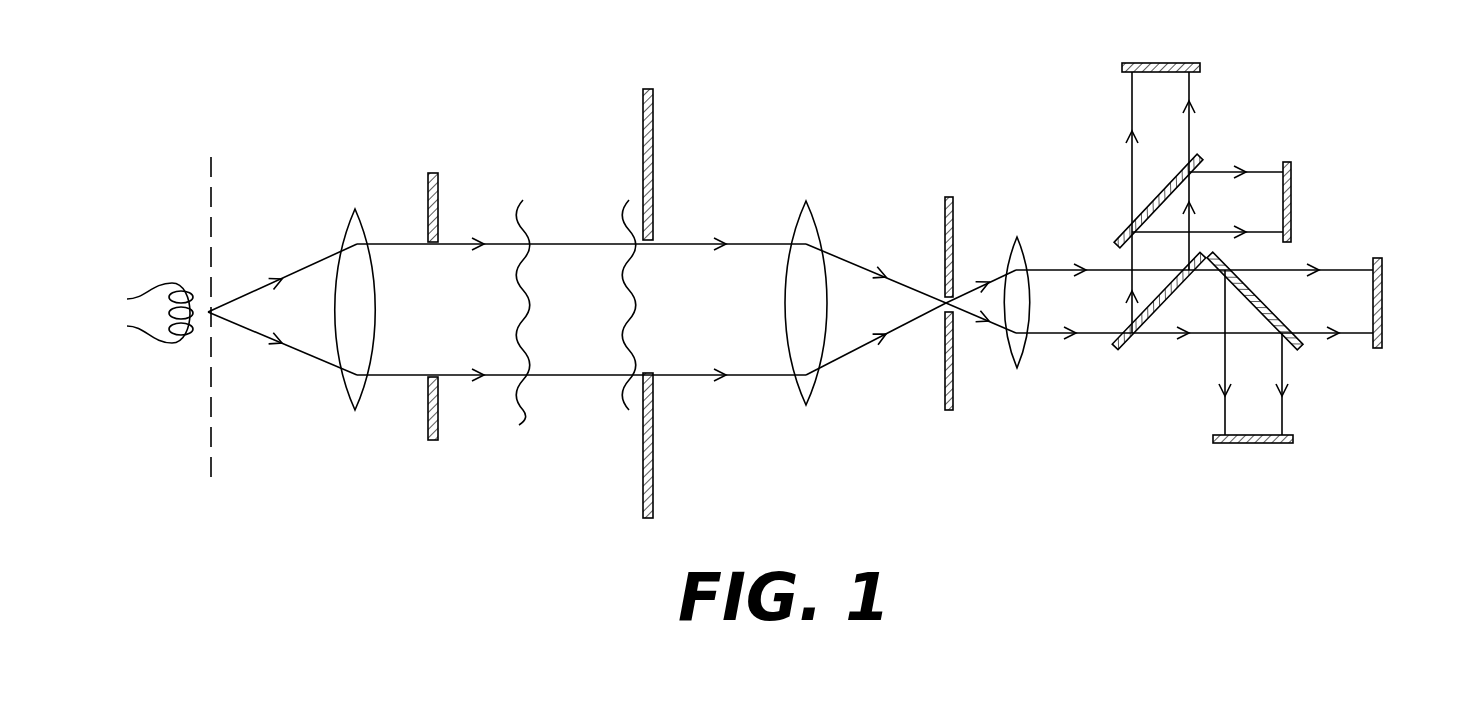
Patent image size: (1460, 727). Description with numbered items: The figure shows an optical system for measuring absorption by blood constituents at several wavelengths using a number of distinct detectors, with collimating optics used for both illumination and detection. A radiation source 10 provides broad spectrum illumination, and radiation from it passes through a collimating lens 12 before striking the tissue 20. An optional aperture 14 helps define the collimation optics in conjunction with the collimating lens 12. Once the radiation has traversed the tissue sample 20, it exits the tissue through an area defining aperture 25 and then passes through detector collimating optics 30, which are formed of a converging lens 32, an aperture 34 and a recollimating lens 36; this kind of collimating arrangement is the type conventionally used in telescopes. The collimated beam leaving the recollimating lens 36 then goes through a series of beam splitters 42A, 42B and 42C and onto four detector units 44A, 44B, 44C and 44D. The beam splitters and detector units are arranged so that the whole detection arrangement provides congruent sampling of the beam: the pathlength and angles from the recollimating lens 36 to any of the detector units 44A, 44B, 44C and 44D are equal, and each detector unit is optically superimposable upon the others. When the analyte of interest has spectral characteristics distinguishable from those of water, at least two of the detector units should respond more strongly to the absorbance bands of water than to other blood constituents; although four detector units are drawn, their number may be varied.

The radiation source 10 is at (147, 272).
The collimating lens 12 is at (350, 215).
The optional aperture 14 is at (437, 306).
The tissue sample 20 is at (576, 305).
The area defining aperture 25 is at (665, 303).
The detector collimating optics 30 is at (895, 212).
The converging lens 32 is at (803, 205).
The aperture 34 is at (958, 292).
The recollimating lens 36 is at (1013, 240).
The beam splitter 42A is at (1150, 203).
The beam splitter 42B is at (1167, 296).
The beam splitter 42C is at (1270, 313).
The detector unit 44A is at (1178, 62).
The detector unit 44B is at (1293, 196).
The detector unit 44C is at (1384, 305).
The detector unit 44D is at (1262, 445).